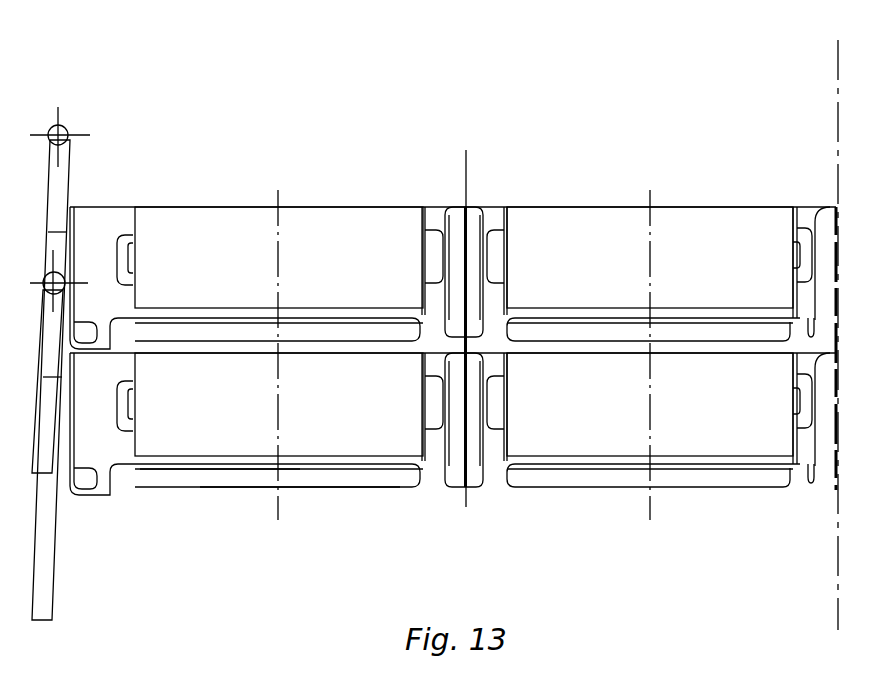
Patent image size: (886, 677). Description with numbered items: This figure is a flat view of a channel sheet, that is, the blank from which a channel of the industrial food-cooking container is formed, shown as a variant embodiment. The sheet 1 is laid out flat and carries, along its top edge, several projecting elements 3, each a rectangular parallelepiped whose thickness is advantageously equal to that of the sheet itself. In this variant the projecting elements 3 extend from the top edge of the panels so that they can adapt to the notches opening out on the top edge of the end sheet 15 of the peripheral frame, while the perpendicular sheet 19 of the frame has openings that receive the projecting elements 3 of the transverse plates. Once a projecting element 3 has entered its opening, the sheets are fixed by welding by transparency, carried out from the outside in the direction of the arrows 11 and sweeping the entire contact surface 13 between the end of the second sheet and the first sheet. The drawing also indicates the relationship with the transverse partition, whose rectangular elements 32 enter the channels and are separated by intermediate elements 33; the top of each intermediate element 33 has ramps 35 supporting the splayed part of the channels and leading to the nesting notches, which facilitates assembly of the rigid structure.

The sheet 1 is at (212, 270).
The projecting element 3 is at (107, 213).
The arrows 11 is at (320, 317).
The contact surface 13 is at (184, 464).
The end sheet 15 is at (480, 488).
The sheet 19 is at (310, 489).
The rectangular element 32 is at (838, 73).
The intermediate element 33 is at (50, 592).
The ramp 35 is at (68, 128).